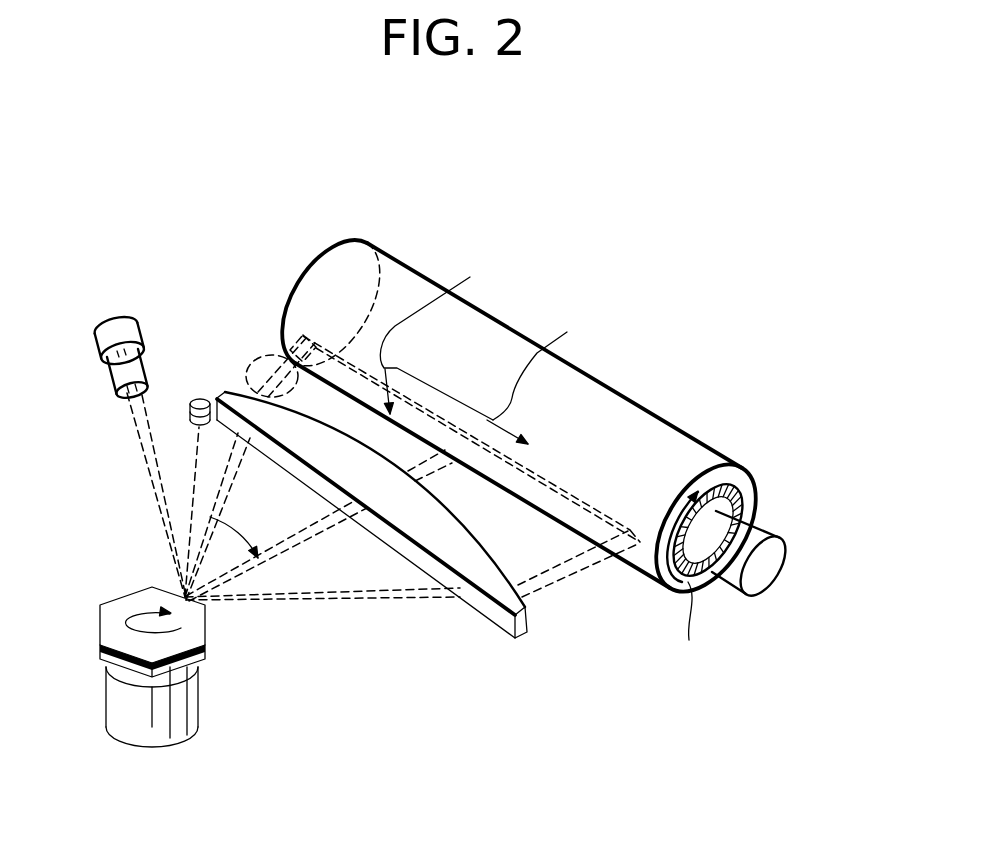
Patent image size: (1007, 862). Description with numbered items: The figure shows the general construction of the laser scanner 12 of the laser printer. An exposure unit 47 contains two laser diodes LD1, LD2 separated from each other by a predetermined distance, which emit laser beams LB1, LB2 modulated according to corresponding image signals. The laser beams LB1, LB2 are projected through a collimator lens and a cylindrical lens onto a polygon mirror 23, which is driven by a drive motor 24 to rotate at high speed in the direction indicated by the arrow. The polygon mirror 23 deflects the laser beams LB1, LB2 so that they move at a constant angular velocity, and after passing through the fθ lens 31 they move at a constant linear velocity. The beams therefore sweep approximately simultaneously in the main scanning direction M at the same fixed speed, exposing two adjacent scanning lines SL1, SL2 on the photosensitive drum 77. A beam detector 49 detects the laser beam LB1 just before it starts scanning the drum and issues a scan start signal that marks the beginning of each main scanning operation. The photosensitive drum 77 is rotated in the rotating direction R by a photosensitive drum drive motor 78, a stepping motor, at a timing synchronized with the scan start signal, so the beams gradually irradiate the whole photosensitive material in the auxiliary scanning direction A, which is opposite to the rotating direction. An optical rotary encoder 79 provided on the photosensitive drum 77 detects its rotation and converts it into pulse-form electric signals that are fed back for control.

The laser scanner 12 is at (389, 745).
The polygon mirror 23 is at (207, 623).
The drive motor 24 is at (198, 687).
The fθ lens 31 is at (488, 613).
The exposure unit 47 is at (92, 298).
The beam detector 49 is at (200, 397).
The photosensitive drum 77 is at (688, 430).
The photosensitive drum drive motor 78 is at (777, 557).
The optical rotary encoder 79 is at (742, 500).
The laser diode LD1 is at (133, 348).
The laser diode LD2 is at (110, 362).
The laser beam LB1 is at (348, 590).
The laser beam LB2 is at (393, 593).
The scanning line SL1 is at (298, 290).
The scanning line SL2 is at (263, 380).